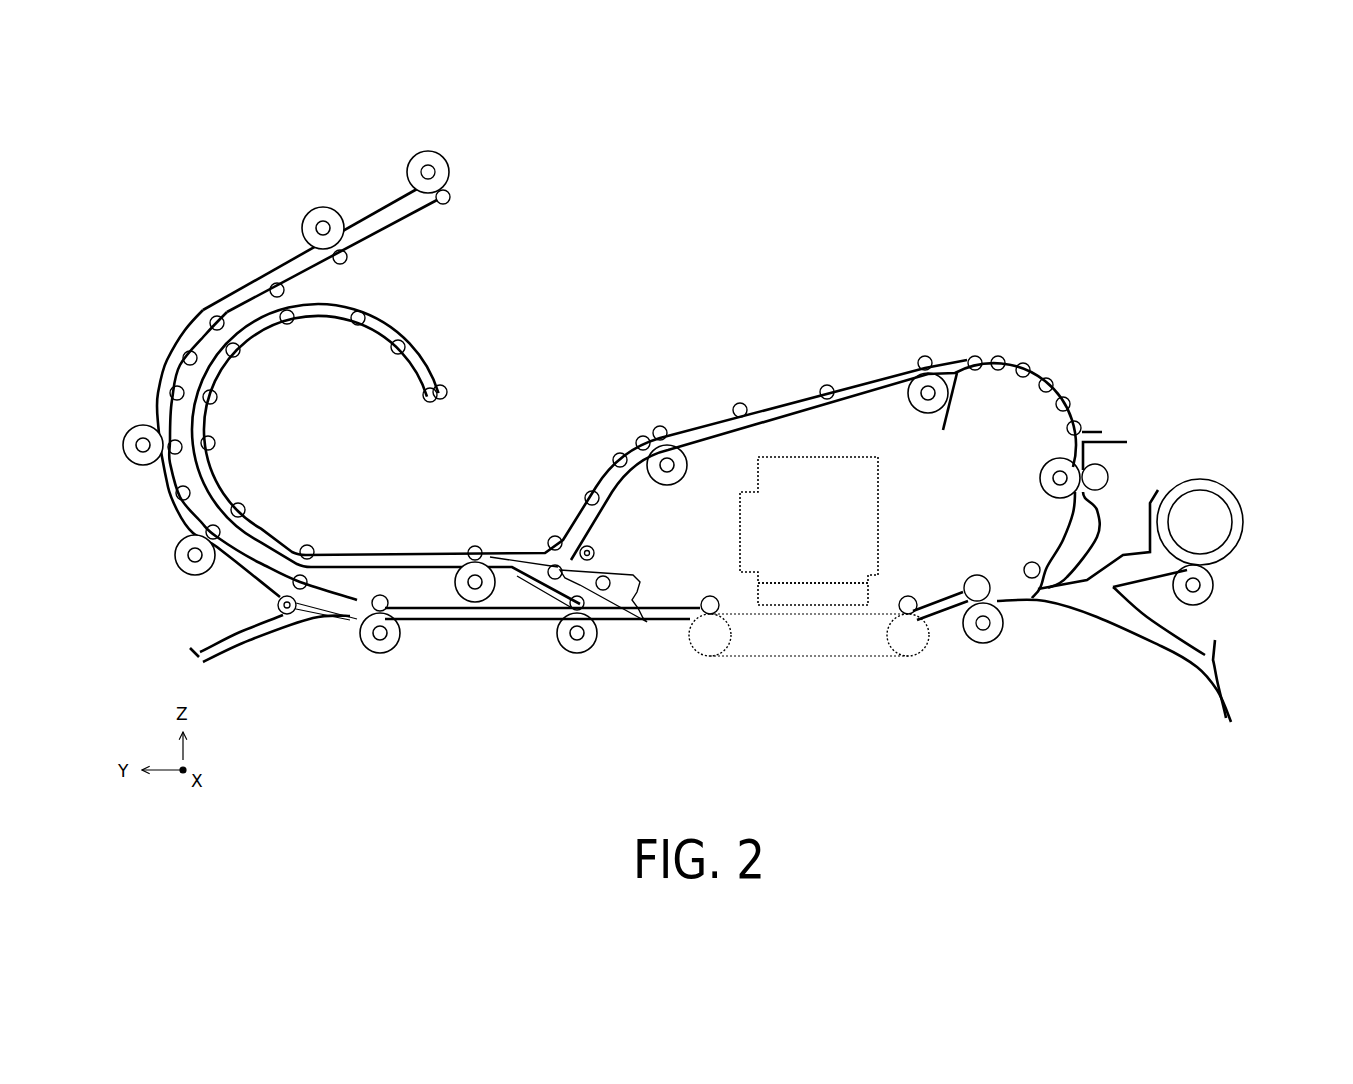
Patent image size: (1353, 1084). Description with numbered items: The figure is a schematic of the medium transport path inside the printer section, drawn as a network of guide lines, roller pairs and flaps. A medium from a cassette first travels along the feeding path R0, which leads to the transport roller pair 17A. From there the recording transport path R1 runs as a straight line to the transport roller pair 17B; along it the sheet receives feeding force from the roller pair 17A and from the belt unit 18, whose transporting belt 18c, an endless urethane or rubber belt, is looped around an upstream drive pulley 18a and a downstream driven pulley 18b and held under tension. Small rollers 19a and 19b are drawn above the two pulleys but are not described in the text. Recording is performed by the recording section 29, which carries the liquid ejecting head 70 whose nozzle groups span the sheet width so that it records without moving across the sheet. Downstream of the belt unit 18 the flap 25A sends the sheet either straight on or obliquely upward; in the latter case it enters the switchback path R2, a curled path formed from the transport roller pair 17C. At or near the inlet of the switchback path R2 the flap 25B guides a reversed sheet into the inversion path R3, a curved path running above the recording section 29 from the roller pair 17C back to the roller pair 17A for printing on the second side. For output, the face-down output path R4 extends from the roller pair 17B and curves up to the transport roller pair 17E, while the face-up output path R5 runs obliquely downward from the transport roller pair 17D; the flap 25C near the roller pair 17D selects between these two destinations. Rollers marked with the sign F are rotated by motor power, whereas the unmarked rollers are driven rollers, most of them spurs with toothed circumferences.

The transport roller pair 17A is at (1003, 645).
The transport roller pair 17B is at (565, 663).
The transport roller pair 17C is at (447, 530).
The transport roller pair 17D is at (392, 662).
The transport roller pair 17E is at (385, 160).
The belt unit 18 is at (823, 665).
The drive pulley 18a is at (915, 660).
The driven pulley 18b is at (722, 655).
The transporting belt 18c is at (853, 622).
The pressing roller 19a is at (910, 595).
The pressing roller 19b is at (712, 595).
The flap 25A is at (622, 606).
The flap 25B is at (548, 546).
The flap 25C is at (297, 614).
The recording section 29 is at (895, 486).
The liquid ejecting head 70 is at (832, 590).
The driven rollers (motor-powered rollers) F is at (420, 153).
The feeding path R0 is at (1242, 690).
The recording transport path R1 is at (805, 674).
The switchback path R2 is at (280, 385).
The inversion path R3 is at (775, 372).
The face-down output path R4 is at (150, 312).
The face-up output path R5 is at (237, 673).